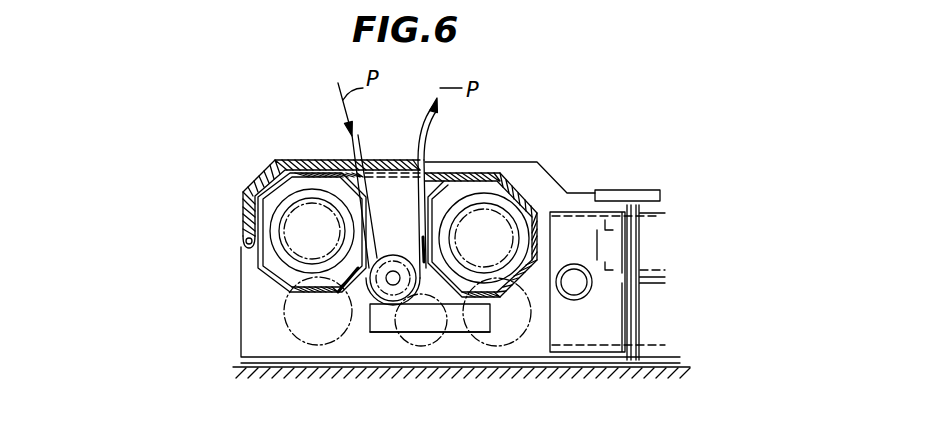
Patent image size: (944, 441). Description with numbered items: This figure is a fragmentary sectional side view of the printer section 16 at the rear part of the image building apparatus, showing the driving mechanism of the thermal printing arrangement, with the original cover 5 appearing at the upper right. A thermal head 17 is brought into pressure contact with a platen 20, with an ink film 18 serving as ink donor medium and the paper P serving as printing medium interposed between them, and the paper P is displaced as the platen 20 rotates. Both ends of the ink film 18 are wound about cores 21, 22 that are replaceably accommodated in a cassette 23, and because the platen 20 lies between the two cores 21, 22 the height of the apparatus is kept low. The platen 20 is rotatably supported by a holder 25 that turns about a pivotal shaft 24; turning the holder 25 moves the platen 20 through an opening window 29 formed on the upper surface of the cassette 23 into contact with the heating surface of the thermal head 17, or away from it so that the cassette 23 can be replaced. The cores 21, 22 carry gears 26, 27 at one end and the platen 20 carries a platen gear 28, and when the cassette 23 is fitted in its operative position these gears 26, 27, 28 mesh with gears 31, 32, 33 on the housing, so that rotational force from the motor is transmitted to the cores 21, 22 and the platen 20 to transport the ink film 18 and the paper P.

The original cover 5 is at (625, 190).
The printer section 16 is at (361, 338).
The thermal head 17 is at (385, 333).
The ink film 18 is at (443, 300).
The platen 20 is at (392, 188).
The core 21 is at (320, 203).
The core 22 is at (508, 207).
The cassette 23 is at (258, 258).
The pivotal shaft 24 is at (246, 236).
The holder 25 is at (410, 187).
The gear 26 is at (297, 170).
The gear 27 is at (496, 208).
The platen gear 28 is at (393, 255).
The opening window 29 is at (430, 162).
The gear 31 is at (330, 338).
The gear 32 is at (523, 343).
The gear 33 is at (450, 333).